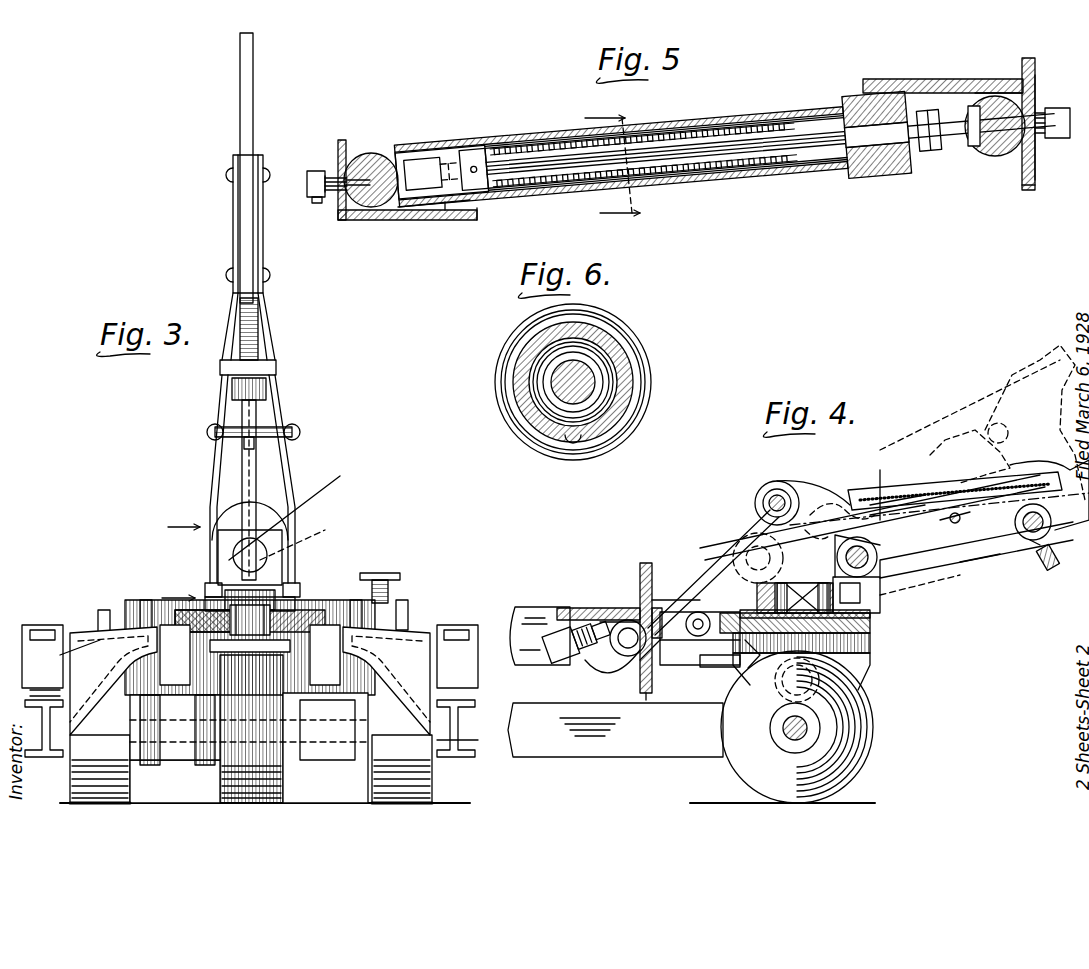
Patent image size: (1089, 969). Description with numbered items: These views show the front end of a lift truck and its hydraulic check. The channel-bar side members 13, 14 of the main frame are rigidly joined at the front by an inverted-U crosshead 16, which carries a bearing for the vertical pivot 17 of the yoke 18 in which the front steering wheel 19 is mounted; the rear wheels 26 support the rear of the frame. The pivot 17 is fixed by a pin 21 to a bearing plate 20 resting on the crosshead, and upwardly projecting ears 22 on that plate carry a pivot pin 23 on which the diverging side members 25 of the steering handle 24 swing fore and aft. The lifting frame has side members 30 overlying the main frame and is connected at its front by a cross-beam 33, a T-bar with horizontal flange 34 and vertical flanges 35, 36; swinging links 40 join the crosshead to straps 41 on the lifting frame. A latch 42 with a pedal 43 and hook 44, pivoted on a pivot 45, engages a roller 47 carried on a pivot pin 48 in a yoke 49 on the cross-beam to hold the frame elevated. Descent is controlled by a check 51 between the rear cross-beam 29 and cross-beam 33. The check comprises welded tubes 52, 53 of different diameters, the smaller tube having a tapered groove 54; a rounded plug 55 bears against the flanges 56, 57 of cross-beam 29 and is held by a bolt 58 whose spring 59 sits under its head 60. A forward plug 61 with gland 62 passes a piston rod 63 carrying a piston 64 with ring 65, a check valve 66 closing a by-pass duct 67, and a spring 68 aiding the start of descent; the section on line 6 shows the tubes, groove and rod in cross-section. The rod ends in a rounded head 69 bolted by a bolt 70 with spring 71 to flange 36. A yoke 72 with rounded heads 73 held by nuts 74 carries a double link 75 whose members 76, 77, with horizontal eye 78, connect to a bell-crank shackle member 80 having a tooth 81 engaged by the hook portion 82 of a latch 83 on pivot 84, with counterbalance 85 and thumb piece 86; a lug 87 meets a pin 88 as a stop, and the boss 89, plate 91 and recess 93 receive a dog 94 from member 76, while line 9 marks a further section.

In FIG. 5, the section line 6— 6 is at (612, 161).
In FIG. 3, the section line 9- 9 is at (181, 552).
In FIG. 3, the side member of main frame 13 is at (470, 757).
In FIG. 4, the side member of main frame 13 is at (600, 758).
In FIG. 3, the side member of main frame 14 is at (40, 757).
In FIG. 3, the crosshead 16 is at (115, 640).
In FIG. 4, the crosshead 16 is at (872, 660).
In FIG. 3, the vertical pivot 17 is at (298, 612).
In FIG. 4, the vertical pivot 17 is at (760, 670).
In FIG. 3, the yoke 18 is at (262, 650).
In FIG. 4, the yoke 18 is at (812, 690).
In FIG. 3, the front steering wheel 19 is at (220, 799).
In FIG. 4, the front steering wheel 19 is at (866, 740).
In FIG. 3, the bearing plate 20 is at (162, 632).
In FIG. 4, the bearing plate 20 is at (870, 628).
In FIG. 3, the pin 21 is at (200, 612).
In FIG. 4, the pin 21 is at (880, 608).
In FIG. 3, the ears 22 is at (215, 540).
In FIG. 4, the ears 22 is at (880, 600).
In FIG. 3, the pivot pin 23 is at (301, 536).
In FIG. 4, the pivot pin 23 is at (920, 582).
In FIG. 3, the steering handle 24 is at (238, 133).
In FIG. 4, the steering handle 24 is at (1000, 548).
In FIG. 3, the diverging side members 25 is at (212, 480).
In FIG. 3, the rear wheels 26 is at (70, 798).
In FIG. 5, the cross-beam 29 is at (360, 221).
In FIG. 4, the side member of lifting frame 30 is at (515, 665).
In FIG. 3, the cross-beam 33 is at (122, 621).
In FIG. 5, the cross-beam 33 is at (1036, 95).
In FIG. 4, the cross-beam 33 is at (638, 615).
In FIG. 5, the horizontal flange 34 is at (880, 80).
In FIG. 4, the horizontal flange 34 is at (560, 610).
In FIG. 5, the vertical flange 35 is at (1030, 60).
In FIG. 4, the vertical flange 35 is at (644, 565).
In FIG. 5, the vertical flange 36 is at (1035, 185).
In FIG. 4, the vertical flange 36 is at (644, 700).
In FIG. 3, the swinging links 40 is at (462, 625).
In FIG. 3, the straps 41 is at (45, 628).
In FIG. 4, the latch 42 is at (720, 600).
In FIG. 4, the pedal 43 is at (836, 595).
In FIG. 4, the hook 44 is at (695, 660).
In FIG. 4, the pivot 45 is at (712, 665).
In FIG. 4, the roller 47 is at (700, 637).
In FIG. 4, the pivot pin 48 is at (658, 608).
In FIG. 4, the yoke 49 is at (655, 598).
In FIG. 5, the check 51 is at (680, 178).
In FIG. 6, the check 51 is at (495, 362).
In FIG. 5, the tube 52 is at (551, 197).
In FIG. 6, the tube 52 is at (514, 382).
In FIG. 5, the tube 53 is at (734, 166).
In FIG. 6, the tube 53 is at (500, 398).
In FIG. 5, the tapered groove 54 is at (594, 186).
In FIG. 6, the tapered groove 54 is at (563, 438).
In FIG. 5, the plug 55 is at (378, 208).
In FIG. 5, the vertical flange 56 is at (342, 142).
In FIG. 5, the horizontal flange 57 is at (477, 221).
In FIG. 5, the bolt 58 is at (312, 190).
In FIG. 5, the spring 59 is at (333, 176).
In FIG. 5, the head 60 is at (316, 203).
In FIG. 5, the plug 61 is at (897, 176).
In FIG. 5, the gland 62 is at (931, 152).
In FIG. 5, the piston rod 63 is at (803, 145).
In FIG. 6, the piston rod 63 is at (596, 380).
In FIG. 5, the piston 64 is at (460, 150).
In FIG. 5, the piston ring 65 is at (482, 152).
In FIG. 5, the check valve 66 is at (418, 221).
In FIG. 5, the duct 67 is at (446, 221).
In FIG. 5, the spring 68 is at (708, 142).
In FIG. 6, the spring 68 is at (525, 350).
In FIG. 5, the rounded head 69 is at (985, 156).
In FIG. 4, the rounded head 69 is at (620, 624).
In FIG. 5, the bolt 70 is at (990, 93).
In FIG. 5, the spring 71 is at (1040, 138).
In FIG. 3, the yoke 72 is at (300, 600).
In FIG. 4, the yoke 72 is at (710, 575).
In FIG. 4, the rounded heads 73 is at (628, 670).
In FIG. 4, the nuts 74 is at (595, 665).
In FIG. 4, the double link 75 is at (830, 505).
In FIG. 4, the member 76 is at (758, 495).
In FIG. 3, the member 77 is at (296, 509).
In FIG. 4, the member 77 is at (860, 500).
In FIG. 4, the horizontally disposed eye 78 is at (778, 495).
In FIG. 3, the shackle member 80 is at (242, 460).
In FIG. 4, the shackle member 80 is at (895, 470).
In FIG. 4, the lug or tooth 81 is at (985, 563).
In FIG. 4, the hook portion 82 is at (975, 487).
In FIG. 3, the latch 83 is at (266, 390).
In FIG. 4, the latch 83 is at (1032, 500).
In FIG. 4, the pivot 84 is at (1030, 545).
In FIG. 3, the counterbalance 85 is at (258, 330).
In FIG. 3, the thumb piece 86 is at (276, 365).
In FIG. 4, the thumb piece 86 is at (1050, 568).
In FIG. 3, the lug 87 is at (258, 445).
In FIG. 4, the lug 87 is at (959, 526).
In FIG. 3, the pin 88 is at (280, 430).
In FIG. 4, the pin 88 is at (952, 525).
In FIG. 3, the boss 89 is at (265, 560).
In FIG. 4, the boss 89 is at (876, 568).
In FIG. 4, the plate 91 is at (770, 560).
In FIG. 4, the recess 93 is at (877, 479).
In FIG. 4, the dog 94 is at (815, 525).